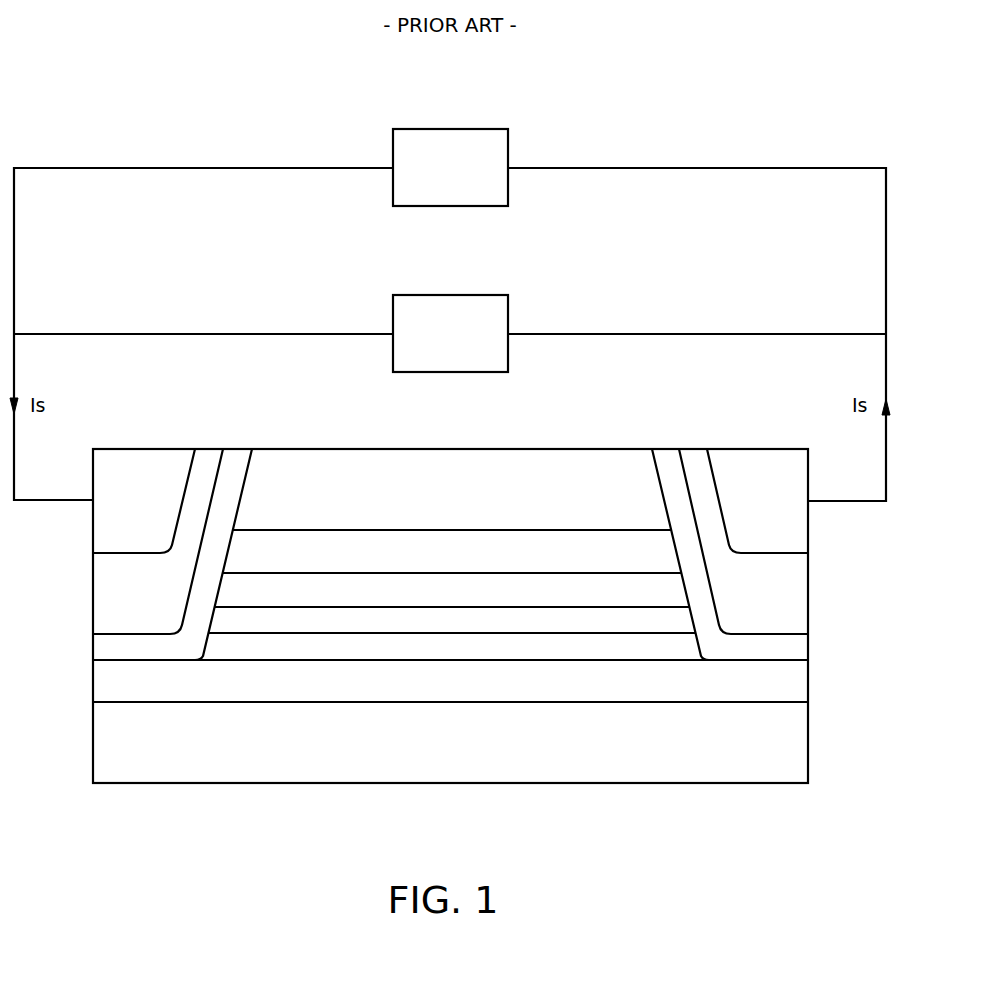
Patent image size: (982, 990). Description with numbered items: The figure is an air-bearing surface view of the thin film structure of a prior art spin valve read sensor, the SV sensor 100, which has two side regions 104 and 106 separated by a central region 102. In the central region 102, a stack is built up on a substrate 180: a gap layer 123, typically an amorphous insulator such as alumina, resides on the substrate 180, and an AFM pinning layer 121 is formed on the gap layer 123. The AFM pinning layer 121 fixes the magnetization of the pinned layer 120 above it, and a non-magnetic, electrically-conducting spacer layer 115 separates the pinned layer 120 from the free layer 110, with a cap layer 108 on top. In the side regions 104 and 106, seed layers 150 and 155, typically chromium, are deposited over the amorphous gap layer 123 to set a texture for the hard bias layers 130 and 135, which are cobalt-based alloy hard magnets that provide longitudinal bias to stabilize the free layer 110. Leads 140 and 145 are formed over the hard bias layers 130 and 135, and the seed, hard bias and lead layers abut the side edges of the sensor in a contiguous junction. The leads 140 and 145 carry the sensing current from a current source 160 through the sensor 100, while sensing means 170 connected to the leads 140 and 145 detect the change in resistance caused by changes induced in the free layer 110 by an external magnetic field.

The SV sensor 100 is at (769, 790).
The central region 102 is at (652, 435).
The side region 104 is at (90, 437).
The side region 106 is at (810, 437).
The cap layer 108 is at (491, 508).
The free layer 110 is at (500, 566).
The spacer layer 115 is at (515, 603).
The pinned layer 120 is at (511, 629).
The AFM pinning layer 121 is at (499, 658).
The gap layer 123 is at (493, 692).
The hard bias layer 130 is at (122, 616).
The hard bias layer 135 is at (739, 616).
The lead 140 is at (122, 528).
The lead 145 is at (739, 528).
The seed layer 150 is at (110, 645).
The seed layer 155 is at (790, 647).
The current source 160 is at (508, 313).
The sensing means 170 is at (508, 148).
The substrate 180 is at (535, 753).